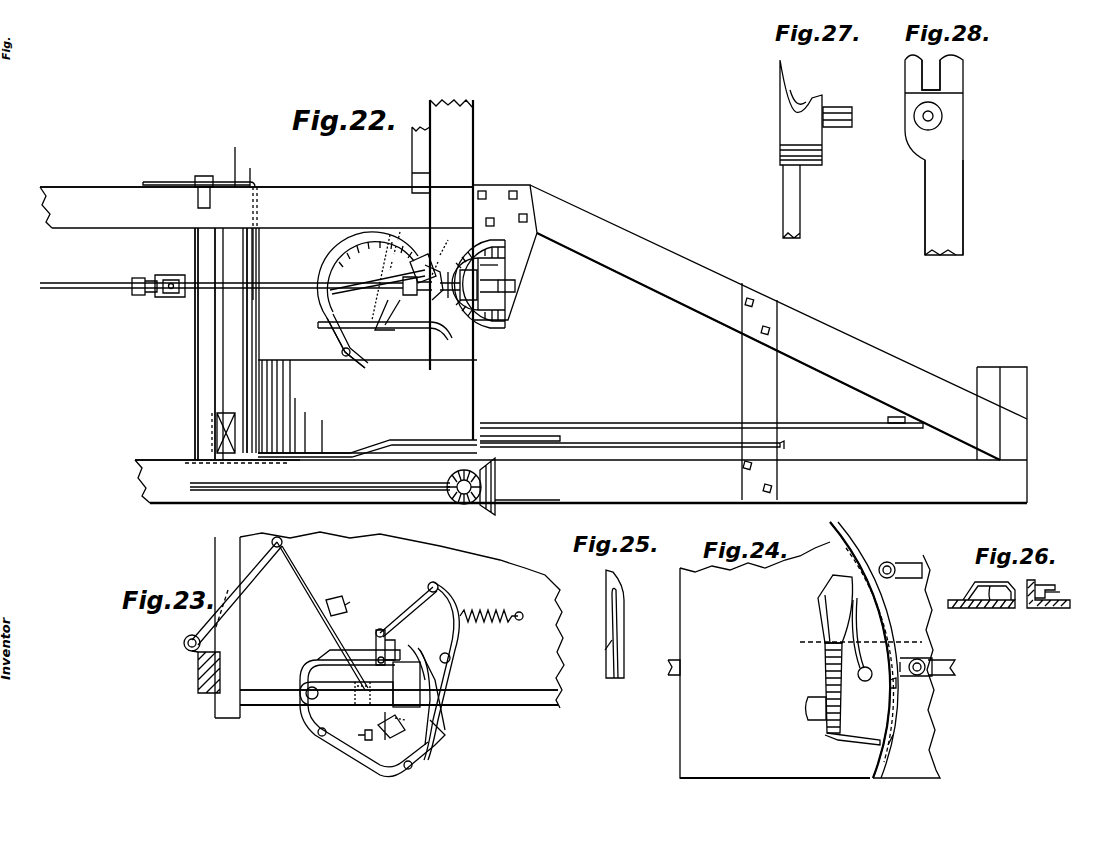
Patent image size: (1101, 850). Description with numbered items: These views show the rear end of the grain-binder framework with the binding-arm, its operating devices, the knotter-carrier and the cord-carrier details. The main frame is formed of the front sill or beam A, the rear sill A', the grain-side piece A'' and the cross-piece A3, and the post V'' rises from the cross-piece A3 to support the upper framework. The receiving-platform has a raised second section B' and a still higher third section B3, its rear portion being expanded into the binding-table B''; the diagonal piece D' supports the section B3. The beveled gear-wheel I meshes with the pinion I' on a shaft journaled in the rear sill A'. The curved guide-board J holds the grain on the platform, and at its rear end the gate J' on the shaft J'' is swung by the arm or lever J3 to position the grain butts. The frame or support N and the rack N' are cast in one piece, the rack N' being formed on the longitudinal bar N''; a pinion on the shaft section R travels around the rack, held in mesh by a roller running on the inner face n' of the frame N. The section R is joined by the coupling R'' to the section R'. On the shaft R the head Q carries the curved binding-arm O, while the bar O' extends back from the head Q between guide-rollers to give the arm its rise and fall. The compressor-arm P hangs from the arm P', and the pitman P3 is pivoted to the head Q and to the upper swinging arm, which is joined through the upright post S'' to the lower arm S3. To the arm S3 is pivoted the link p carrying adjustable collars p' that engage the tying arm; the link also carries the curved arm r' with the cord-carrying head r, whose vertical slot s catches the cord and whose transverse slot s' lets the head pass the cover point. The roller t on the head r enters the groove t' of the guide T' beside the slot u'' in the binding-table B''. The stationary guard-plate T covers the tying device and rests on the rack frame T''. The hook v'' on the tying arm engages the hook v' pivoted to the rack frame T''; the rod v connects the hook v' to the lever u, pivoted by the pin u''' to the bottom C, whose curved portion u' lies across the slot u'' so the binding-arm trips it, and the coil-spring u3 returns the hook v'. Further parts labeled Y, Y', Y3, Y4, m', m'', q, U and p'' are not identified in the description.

In FIG. 22, the front sill or beam A is at (581, 481).
In FIG. 22, the rear sill A' is at (217, 473).
In FIG. 23, the rear sill A' is at (399, 698).
In FIG. 22, the grain-side piece A'' is at (1014, 435).
In FIG. 22, the cross-piece A3 is at (213, 430).
In FIG. 23, the cross-piece A3 is at (226, 616).
In FIG. 22, the second section of receiving-platform B' is at (520, 431).
In FIG. 22, the binding-table B'' is at (367, 442).
In FIG. 24, the binding-table B'' is at (811, 660).
In FIG. 26, the binding-table B'' is at (981, 615).
In FIG. 22, the third section of receiving-platform B3 is at (701, 423).
In FIG. 23, the bottom C is at (402, 620).
In FIG. 22, the diagonal piece of secondary frame D' is at (782, 411).
In FIG. 22, the beveled gear-wheel I is at (498, 486).
In FIG. 22, the pinion I' is at (351, 478).
In FIG. 22, the curved guide-board J is at (367, 406).
In FIG. 22, the board or gate J' is at (243, 340).
In FIG. 22, the shaft J'' is at (266, 264).
In FIG. 22, the arm or lever J3 is at (199, 184).
In FIG. 22, the frame or support N is at (505, 252).
In FIG. 22, the rack N' is at (483, 284).
In FIG. 22, the longitudinal bar N'' is at (511, 281).
In FIG. 22, the inner face of frame n' is at (489, 258).
In FIG. 22, the binding-arm O is at (367, 299).
In FIG. 22, the bar or rod O' is at (375, 343).
In FIG. 22, the compressor-arm P is at (377, 327).
In FIG. 22, the arm P' is at (389, 313).
In FIG. 22, the link or bar (pitman) P3 is at (377, 278).
In FIG. 22, the head Q is at (398, 312).
In FIG. 22, the pin q is at (443, 254).
In FIG. 22, the section of driving-shaft R is at (221, 276).
In FIG. 22, the section of driving-shaft R' is at (131, 277).
In FIG. 22, the coupling R'' is at (168, 277).
In FIG. 22, the upright post S'' is at (179, 344).
In FIG. 23, the upright post S'' is at (175, 662).
In FIG. 24, the upright post S'' is at (873, 650).
In FIG. 23, the lower arm S3 is at (233, 594).
In FIG. 23, the guard-plate or covering T is at (391, 726).
In FIG. 24, the guard-plate or covering T is at (861, 687).
In FIG. 26, the guard-plate or covering T is at (982, 588).
In FIG. 25, the guide T' is at (625, 624).
In FIG. 24, the guide T' is at (868, 660).
In FIG. 26, the guide T' is at (1047, 585).
In FIG. 23, the rack frame T'' is at (372, 713).
In FIG. 27, the roller t is at (843, 117).
In FIG. 28, the roller t is at (933, 116).
In FIG. 25, the recess or groove t' is at (596, 648).
In FIG. 26, the recess or groove t' is at (1060, 592).
In FIG. 23, the cylinder U is at (360, 684).
In FIG. 23, the lever u is at (447, 671).
In FIG. 23, the curved portion of lever u' is at (432, 697).
In FIG. 24, the curved portion of lever u' is at (856, 639).
In FIG. 24, the slot in binding-table u'' is at (901, 662).
In FIG. 26, the slot in binding-table u'' is at (1048, 604).
In FIG. 23, the pin u''' is at (460, 658).
In FIG. 23, the coil-spring u3 is at (491, 606).
In FIG. 22, the post V'' is at (188, 344).
In FIG. 23, the post V'' is at (194, 675).
In FIG. 23, the rod v is at (407, 609).
In FIG. 23, the hook v' is at (371, 647).
In FIG. 23, the hook or catch v'' is at (399, 642).
In FIG. 22, the beam Y is at (256, 202).
In FIG. 22, the diagonal brace Y' is at (778, 322).
In FIG. 22, the upright Y3 is at (759, 391).
In FIG. 22, the post Y4 is at (412, 155).
In FIG. 22, the chain m' is at (377, 295).
In FIG. 22, the chain m'' is at (386, 251).
In FIG. 23, the link p is at (322, 616).
In FIG. 23, the collars p' is at (369, 659).
In FIG. 23, the pin p'' is at (398, 728).
In FIG. 23, the cord-carrying head r is at (429, 693).
In FIG. 27, the cord-carrying head r is at (801, 112).
In FIG. 28, the cord-carrying head r is at (942, 155).
In FIG. 27, the curved arm r' is at (791, 201).
In FIG. 28, the curved arm r' is at (944, 207).
In FIG. 23, the vertical slot s is at (416, 656).
In FIG. 27, the vertical slot s is at (798, 96).
In FIG. 28, the transverse slot s' is at (931, 75).